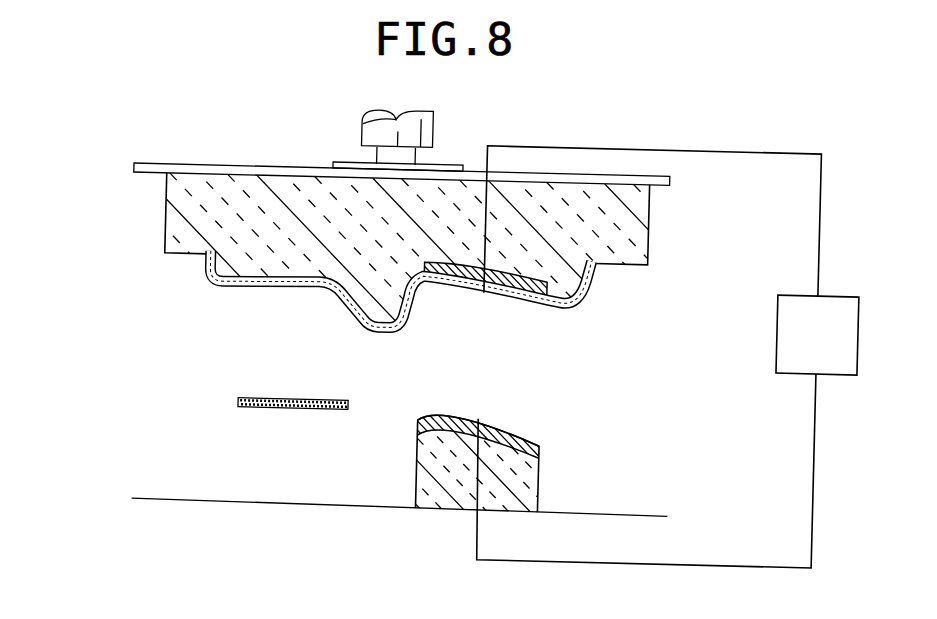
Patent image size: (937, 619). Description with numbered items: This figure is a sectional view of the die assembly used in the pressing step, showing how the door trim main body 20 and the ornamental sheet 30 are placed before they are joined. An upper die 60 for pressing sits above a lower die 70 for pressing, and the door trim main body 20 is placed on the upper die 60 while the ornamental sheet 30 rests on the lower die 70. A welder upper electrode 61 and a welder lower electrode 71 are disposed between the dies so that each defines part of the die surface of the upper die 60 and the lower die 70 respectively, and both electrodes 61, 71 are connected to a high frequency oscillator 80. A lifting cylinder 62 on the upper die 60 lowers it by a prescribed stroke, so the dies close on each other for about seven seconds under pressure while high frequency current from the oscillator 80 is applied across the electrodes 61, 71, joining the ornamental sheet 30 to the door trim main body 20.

The door trim main body 20 is at (308, 303).
The ornamental sheet 30 is at (478, 408).
The upper die for pressing 60 is at (178, 220).
The welder upper electrode 61 is at (517, 273).
The lifting cylinder 62 is at (364, 122).
The lower die for pressing 70 is at (520, 479).
The welder lower electrode 71 is at (515, 433).
The high frequency oscillator 80 is at (835, 350).